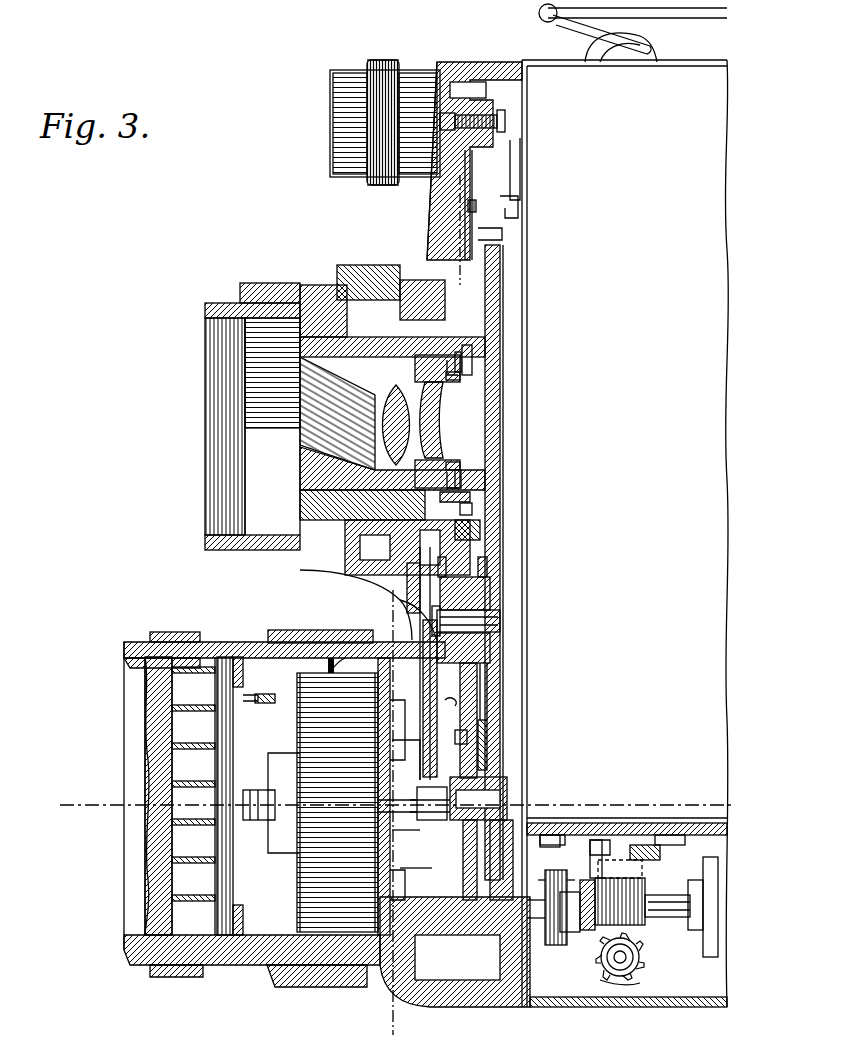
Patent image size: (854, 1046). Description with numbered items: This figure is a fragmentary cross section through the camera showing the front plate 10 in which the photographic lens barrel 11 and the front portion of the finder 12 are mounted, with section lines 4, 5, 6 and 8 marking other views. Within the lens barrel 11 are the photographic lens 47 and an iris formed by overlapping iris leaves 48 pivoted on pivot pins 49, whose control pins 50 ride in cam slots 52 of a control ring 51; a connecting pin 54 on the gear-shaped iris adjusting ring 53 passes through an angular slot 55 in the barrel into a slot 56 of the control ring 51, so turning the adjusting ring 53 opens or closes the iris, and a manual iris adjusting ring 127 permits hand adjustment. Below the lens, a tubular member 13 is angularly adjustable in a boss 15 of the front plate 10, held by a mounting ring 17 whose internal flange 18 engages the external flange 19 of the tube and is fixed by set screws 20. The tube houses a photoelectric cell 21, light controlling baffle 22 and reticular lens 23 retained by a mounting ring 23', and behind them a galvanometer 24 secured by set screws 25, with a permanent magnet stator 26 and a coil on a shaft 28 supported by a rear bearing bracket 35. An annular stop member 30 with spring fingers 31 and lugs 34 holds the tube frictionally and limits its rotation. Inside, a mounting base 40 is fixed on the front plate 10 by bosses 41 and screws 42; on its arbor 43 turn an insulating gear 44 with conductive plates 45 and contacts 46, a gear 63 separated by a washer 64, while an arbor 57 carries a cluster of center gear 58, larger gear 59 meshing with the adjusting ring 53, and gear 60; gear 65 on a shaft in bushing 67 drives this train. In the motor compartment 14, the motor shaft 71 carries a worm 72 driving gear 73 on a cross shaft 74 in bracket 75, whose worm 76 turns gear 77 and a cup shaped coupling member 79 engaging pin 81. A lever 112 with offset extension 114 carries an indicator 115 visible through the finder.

The section line 4- 4 is at (540, 40).
The section line 5- 5 is at (372, 598).
The section line 6- 6 is at (372, 592).
The section line 8- 8 is at (575, 797).
The front plate 10 is at (437, 210).
The photographic lens barrel 11 is at (308, 283).
The finder 12 is at (351, 70).
The tubular member 13 is at (252, 645).
The motor compartment 14 is at (697, 990).
The boss 15 is at (385, 632).
The mounting ring 17 is at (333, 980).
The internal flange 18 is at (312, 978).
The external flange 19 is at (322, 980).
The set screws 20 is at (362, 978).
The photoelectric cell 21 is at (226, 742).
The light controlling baffle 22 is at (193, 700).
The reticular lens 23 is at (257, 809).
The mounting ring 23' is at (169, 613).
The galvanometer 24 is at (312, 887).
The set screws 25 is at (336, 673).
The permanent magnet stator 26 is at (284, 803).
The shaft 28 is at (266, 815).
The annular stop member 30 is at (392, 742).
The spring fingers 31 is at (362, 658).
The lugs 34 is at (392, 720).
The rear bearing bracket 35 is at (392, 792).
The mounting base 40 is at (492, 292).
The bosses 41 is at (470, 102).
The screws 42 is at (505, 113).
The arbor 43 is at (492, 778).
The gear 44 is at (492, 700).
The conductive plates 45 is at (478, 715).
The contacts 46 is at (382, 832).
The photographic lens 47 is at (376, 440).
The iris leaves 48 is at (448, 415).
The pivot pins 49 is at (450, 366).
The control pins 50 is at (457, 375).
The control ring 51 is at (465, 347).
The cam slots 52 is at (458, 357).
The iris adjusting ring 53 is at (472, 537).
The connecting pin 54 is at (470, 497).
The angular slot 55 is at (470, 510).
The slot 56 is at (375, 492).
The arbor 57 is at (480, 618).
The center gear 58 is at (475, 590).
The gear 59 is at (462, 575).
The gear 60 is at (500, 672).
The gear 63 is at (482, 740).
The washer 64 is at (487, 760).
The gear 65 is at (557, 943).
The bushing 67 is at (555, 845).
The motor shaft 71 is at (675, 918).
The worm 72 is at (623, 905).
The gear 73 is at (637, 962).
The cross shaft 74 is at (634, 973).
The bracket 75 is at (635, 856).
The worm 76 is at (648, 958).
The gear 77 is at (617, 850).
The cup shaped coupling member 79 is at (567, 940).
The pin 81 is at (548, 904).
The lever 112 is at (498, 234).
The offset extension 114 is at (515, 182).
The indicator 115 is at (520, 145).
The manual iris adjusting ring 127 is at (368, 275).